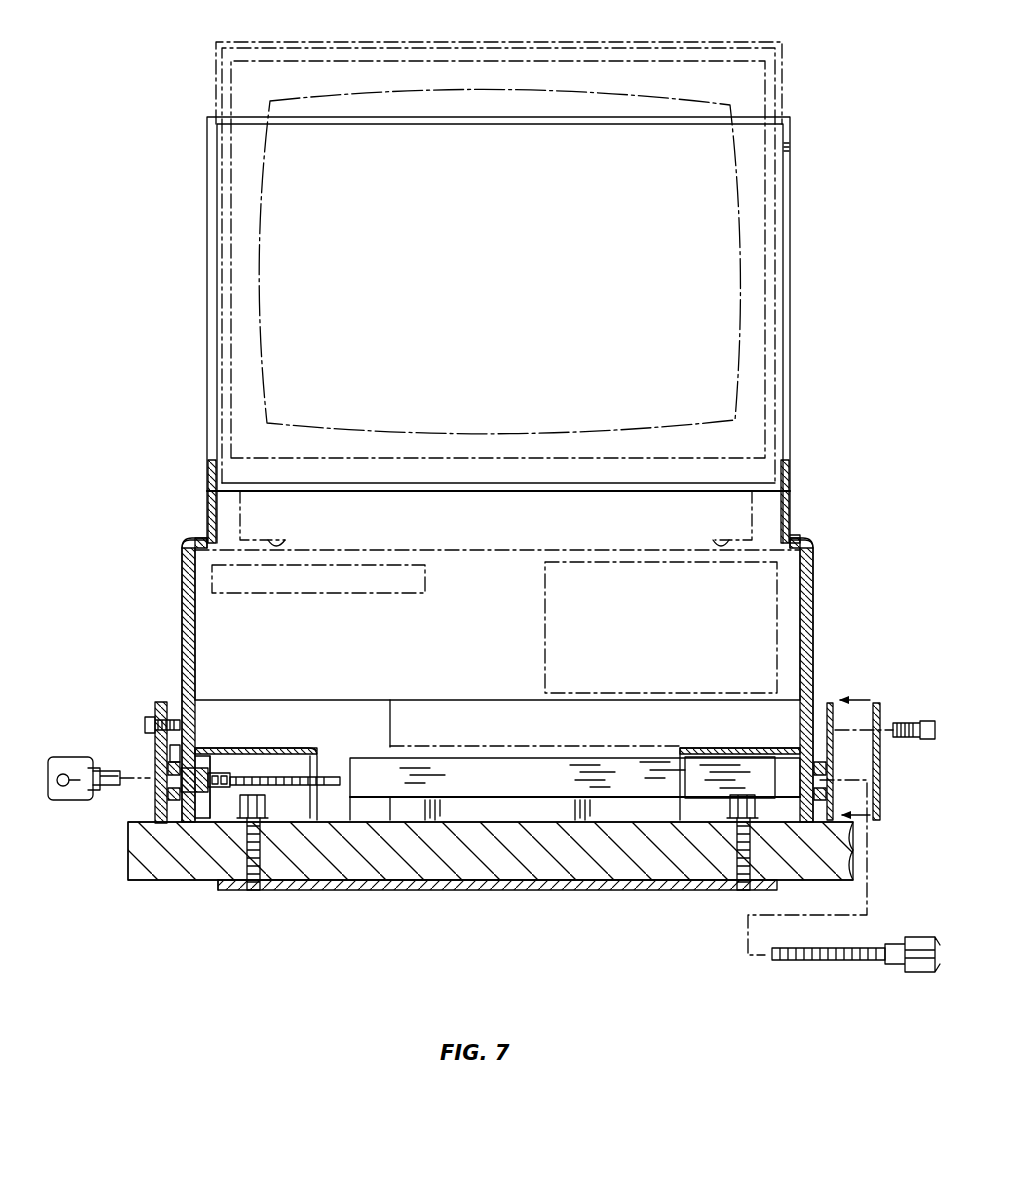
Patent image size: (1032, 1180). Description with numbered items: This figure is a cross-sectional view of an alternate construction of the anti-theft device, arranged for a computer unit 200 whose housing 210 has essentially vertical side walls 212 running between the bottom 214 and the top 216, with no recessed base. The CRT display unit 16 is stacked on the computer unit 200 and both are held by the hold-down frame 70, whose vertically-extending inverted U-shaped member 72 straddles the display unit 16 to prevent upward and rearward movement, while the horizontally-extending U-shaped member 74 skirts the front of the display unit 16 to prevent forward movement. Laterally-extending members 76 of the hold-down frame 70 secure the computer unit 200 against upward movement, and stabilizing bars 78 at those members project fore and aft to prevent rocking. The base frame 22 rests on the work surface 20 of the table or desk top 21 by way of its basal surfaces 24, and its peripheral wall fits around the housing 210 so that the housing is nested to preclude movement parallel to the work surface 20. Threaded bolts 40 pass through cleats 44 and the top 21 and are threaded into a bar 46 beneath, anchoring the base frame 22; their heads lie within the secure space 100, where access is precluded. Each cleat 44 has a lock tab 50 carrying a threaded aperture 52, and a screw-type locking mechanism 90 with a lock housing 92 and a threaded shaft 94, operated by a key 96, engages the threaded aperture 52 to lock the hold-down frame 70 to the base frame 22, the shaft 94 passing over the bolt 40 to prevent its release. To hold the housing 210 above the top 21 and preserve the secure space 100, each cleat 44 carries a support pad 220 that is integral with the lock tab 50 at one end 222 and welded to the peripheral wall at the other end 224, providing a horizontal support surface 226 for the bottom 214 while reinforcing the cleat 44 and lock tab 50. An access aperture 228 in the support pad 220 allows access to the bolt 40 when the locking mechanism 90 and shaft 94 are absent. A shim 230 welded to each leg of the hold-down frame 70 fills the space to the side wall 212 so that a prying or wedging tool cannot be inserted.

The CRT display unit 16 is at (762, 215).
The work surface 20 is at (525, 822).
The table or desk top 21 is at (135, 870).
The base frame 22 is at (820, 700).
The basal surfaces 24 is at (480, 822).
The threaded bolts 40 is at (220, 875).
The cleats 44 is at (262, 840).
The bar 46 is at (320, 890).
The lock tab 50 is at (655, 758).
The threaded aperture 52 is at (486, 808).
The hold-down frame 70 is at (792, 360).
The inverted U-shaped member 72 is at (792, 142).
The horizontally-extending U-shaped member 74 is at (789, 485).
The laterally-extending members 76 is at (792, 535).
The stabilizing bars 78 is at (803, 540).
The screw-type locking mechanism 90 is at (218, 797).
The lock housing 92 is at (170, 798).
The threaded shaft 94 is at (292, 812).
The key 96 is at (64, 760).
The secure space 100 is at (381, 815).
The computer unit 200 is at (468, 555).
The housing 210 is at (335, 553).
The side walls 212 is at (183, 635).
The bottom 214 is at (535, 769).
The top 216 is at (545, 550).
The support pad 220 is at (315, 762).
The one end 222 is at (392, 745).
The other end 224 is at (200, 758).
The horizontal support surface 226 is at (252, 745).
The access aperture 228 is at (265, 748).
The shim 230 is at (196, 603).